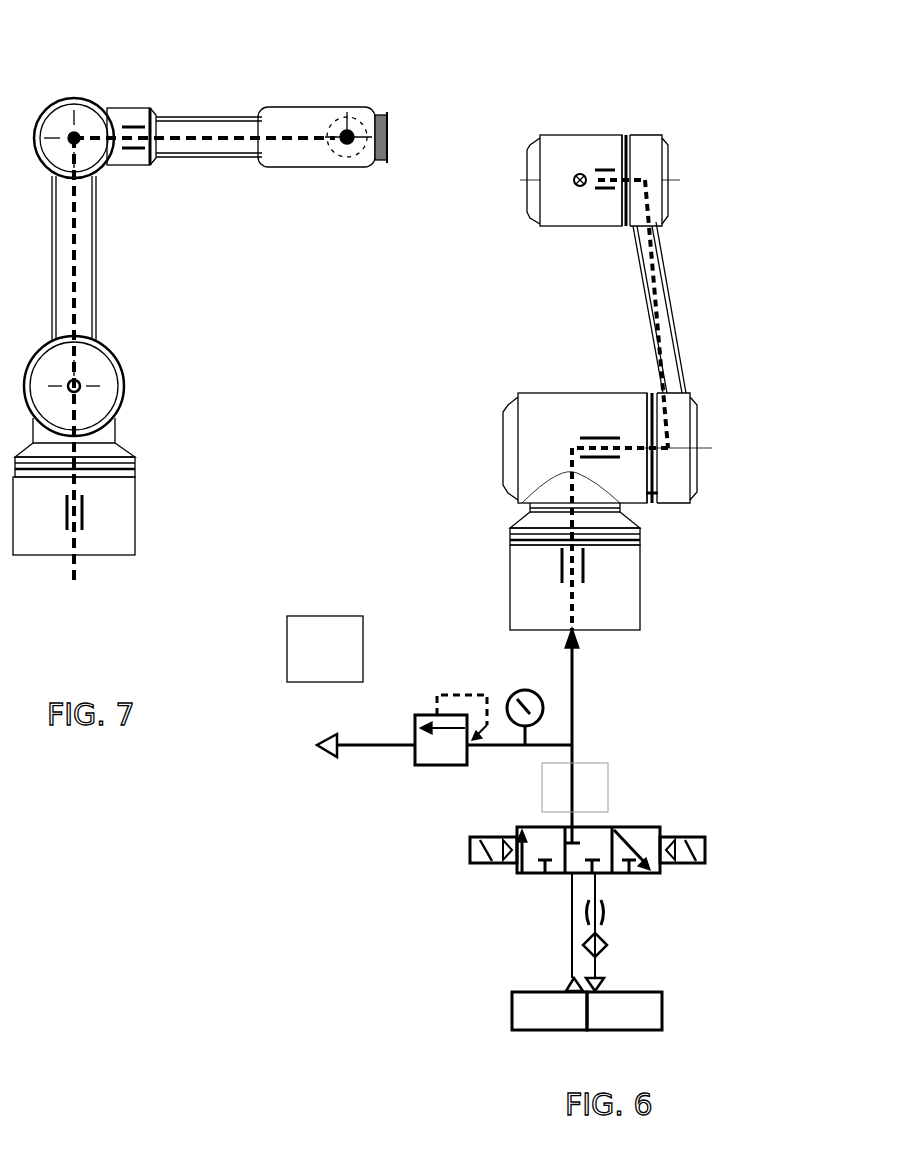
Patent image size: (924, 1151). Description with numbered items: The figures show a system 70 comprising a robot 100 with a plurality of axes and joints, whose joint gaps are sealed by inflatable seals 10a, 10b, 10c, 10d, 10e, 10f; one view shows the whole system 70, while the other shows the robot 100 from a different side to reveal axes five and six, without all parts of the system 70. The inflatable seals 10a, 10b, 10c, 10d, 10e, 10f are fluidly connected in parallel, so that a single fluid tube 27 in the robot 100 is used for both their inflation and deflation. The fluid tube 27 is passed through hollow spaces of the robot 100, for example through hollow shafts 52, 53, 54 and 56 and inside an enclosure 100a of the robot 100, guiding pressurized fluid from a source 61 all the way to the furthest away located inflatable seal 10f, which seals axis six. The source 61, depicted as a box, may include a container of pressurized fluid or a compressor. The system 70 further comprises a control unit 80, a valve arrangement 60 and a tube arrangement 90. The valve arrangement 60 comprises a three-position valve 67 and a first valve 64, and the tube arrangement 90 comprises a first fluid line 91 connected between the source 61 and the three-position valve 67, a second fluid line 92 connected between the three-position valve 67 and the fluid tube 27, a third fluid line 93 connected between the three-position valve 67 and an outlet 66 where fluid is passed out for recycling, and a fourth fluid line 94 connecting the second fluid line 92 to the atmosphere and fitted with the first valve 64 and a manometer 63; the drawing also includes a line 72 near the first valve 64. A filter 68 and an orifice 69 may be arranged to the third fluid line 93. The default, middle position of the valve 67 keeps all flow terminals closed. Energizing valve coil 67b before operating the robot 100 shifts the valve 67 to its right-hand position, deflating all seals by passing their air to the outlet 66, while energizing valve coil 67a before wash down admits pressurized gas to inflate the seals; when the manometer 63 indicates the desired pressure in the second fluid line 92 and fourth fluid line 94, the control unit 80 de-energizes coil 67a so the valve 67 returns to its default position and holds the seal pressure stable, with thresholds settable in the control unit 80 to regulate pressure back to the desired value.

In FIG. 7, the inflatable seal 10a is at (113, 470).
In FIG. 6, the inflatable seal 10a is at (635, 535).
In FIG. 6, the inflatable seal 10b is at (650, 393).
In FIG. 6, the inflatable seal 10c is at (626, 135).
In FIG. 7, the inflatable seal 10d is at (152, 160).
In FIG. 7, the inflatable seal 10e is at (262, 110).
In FIG. 7, the inflatable seal 10f is at (383, 160).
In FIG. 7, the fluid tube 27 is at (72, 568).
In FIG. 6, the fluid tube 27 is at (572, 480).
In FIG. 6, the hollow shaft 52 is at (598, 168).
In FIG. 7, the hollow shaft 53 is at (128, 125).
In FIG. 6, the hollow shaft 54 is at (600, 437).
In FIG. 7, the hollow shaft 56 is at (85, 510).
In FIG. 6, the hollow shaft 56 is at (560, 560).
In FIG. 6, the valve arrangement 60 is at (785, 887).
In FIG. 6, the source of pressurized fluid 61 is at (549, 1011).
In FIG. 6, the manometer 63 is at (516, 693).
In FIG. 6, the first valve 64 is at (413, 717).
In FIG. 6, the outlet 66 is at (624, 1011).
In FIG. 6, the three-position valve 67 is at (655, 828).
In FIG. 6, the valve coil 67a is at (471, 852).
In FIG. 6, the valve coil 67b is at (707, 852).
In FIG. 6, the filter 68 is at (607, 945).
In FIG. 6, the orifice 69 is at (606, 910).
In FIG. 6, the system 70 is at (787, 317).
In FIG. 6, the exhaust line 72 is at (362, 752).
In FIG. 6, the control unit 80 is at (325, 649).
In FIG. 6, the tube arrangement 90 is at (785, 808).
In FIG. 6, the first fluid line 91 is at (568, 916).
In FIG. 6, the second fluid line 92 is at (577, 680).
In FIG. 6, the third fluid line 93 is at (600, 882).
In FIG. 6, the fourth fluid line 94 is at (405, 752).
In FIG. 7, the robot 100 is at (278, 165).
In FIG. 6, the robot 100 is at (565, 228).
In FIG. 6, the enclosure 100a is at (662, 285).